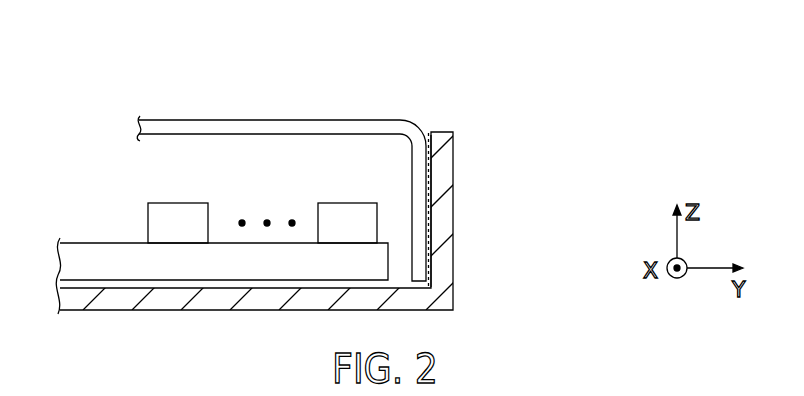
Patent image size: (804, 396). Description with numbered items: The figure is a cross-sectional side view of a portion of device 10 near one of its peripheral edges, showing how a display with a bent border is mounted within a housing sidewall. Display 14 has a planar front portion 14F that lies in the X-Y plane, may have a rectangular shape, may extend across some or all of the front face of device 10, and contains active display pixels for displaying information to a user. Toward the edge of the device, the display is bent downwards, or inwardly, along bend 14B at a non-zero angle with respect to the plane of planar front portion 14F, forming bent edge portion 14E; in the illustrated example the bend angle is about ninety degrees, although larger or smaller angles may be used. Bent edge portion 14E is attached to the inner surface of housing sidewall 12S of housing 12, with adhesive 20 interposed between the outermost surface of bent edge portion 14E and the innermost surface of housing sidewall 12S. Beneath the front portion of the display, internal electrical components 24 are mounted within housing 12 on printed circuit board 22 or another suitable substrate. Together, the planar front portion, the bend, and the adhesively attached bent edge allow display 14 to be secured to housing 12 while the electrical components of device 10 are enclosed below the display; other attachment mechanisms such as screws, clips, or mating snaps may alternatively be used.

The device 10 is at (577, 35).
The housing 12 is at (445, 297).
The housing sidewall 12S is at (443, 208).
The display 14 is at (364, 56).
The planar front portion 14F is at (411, 108).
The bend 14B is at (411, 135).
The bent edge portion 14E is at (405, 280).
The adhesive 20 is at (432, 150).
The printed circuit board 22 is at (114, 255).
The internal electrical components 24 is at (337, 203).